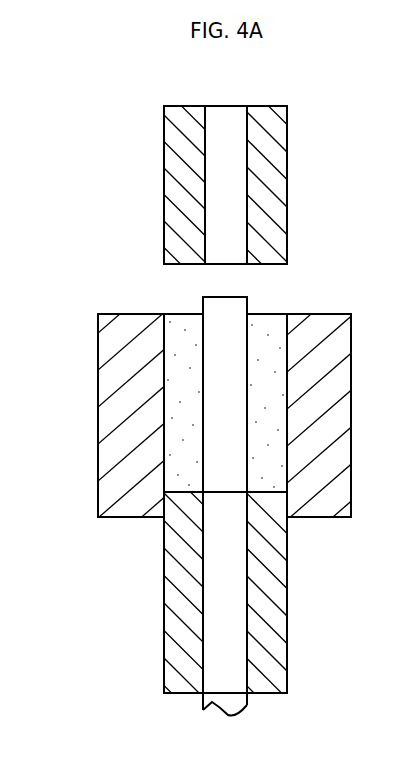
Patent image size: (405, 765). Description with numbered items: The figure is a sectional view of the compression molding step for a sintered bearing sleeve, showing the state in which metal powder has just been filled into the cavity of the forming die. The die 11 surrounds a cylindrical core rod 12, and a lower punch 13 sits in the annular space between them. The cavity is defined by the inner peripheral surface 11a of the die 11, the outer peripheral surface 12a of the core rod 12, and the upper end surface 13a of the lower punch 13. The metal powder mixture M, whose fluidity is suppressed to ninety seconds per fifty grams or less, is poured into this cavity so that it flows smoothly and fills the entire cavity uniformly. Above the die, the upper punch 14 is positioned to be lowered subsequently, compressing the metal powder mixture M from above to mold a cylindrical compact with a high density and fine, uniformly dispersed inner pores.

The upper punch 14 is at (172, 184).
The die 11 is at (111, 383).
The inner peripheral surface 11a is at (172, 444).
The metal powder mixture M is at (182, 325).
The outer peripheral surface 12a is at (252, 342).
The core rod 12 is at (212, 583).
The lower punch 13 is at (173, 622).
The upper end surface 13a is at (266, 492).